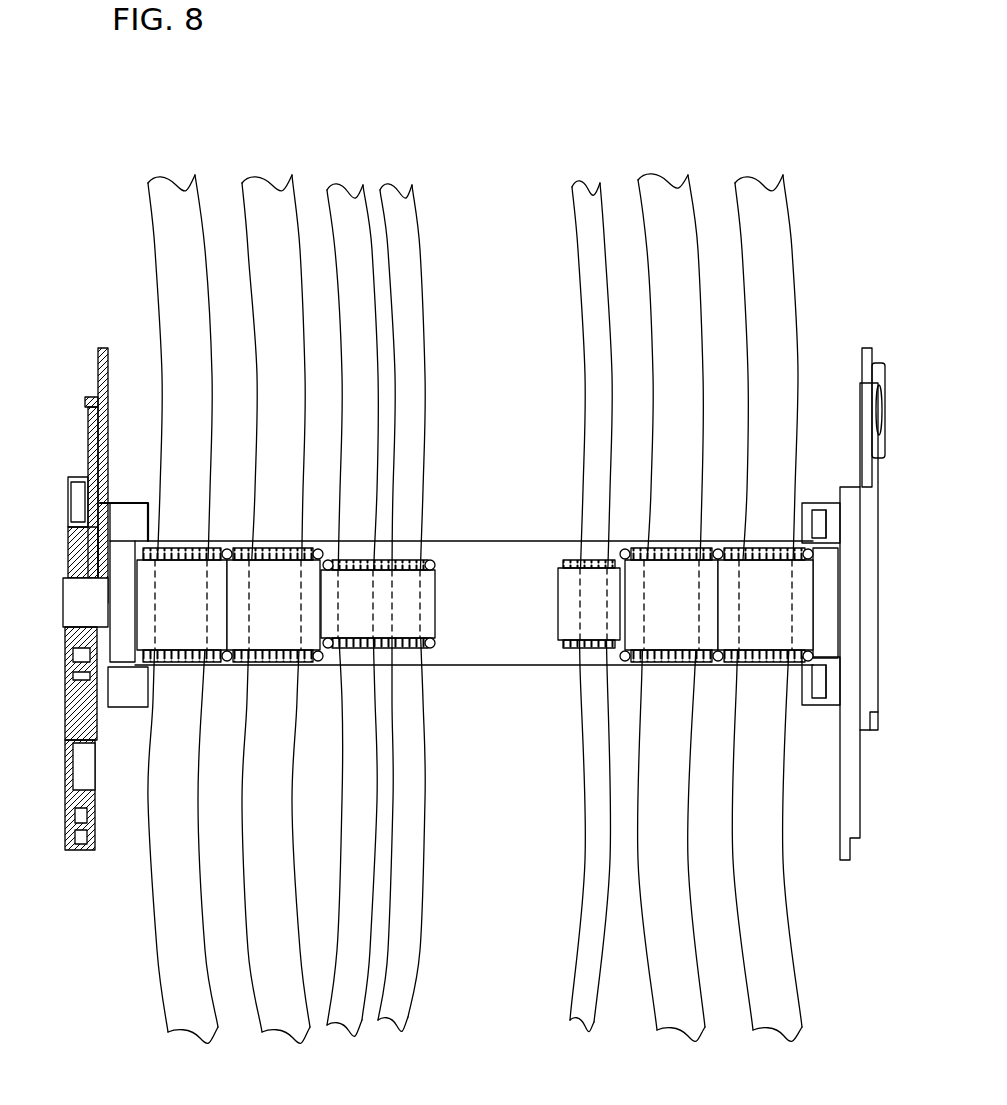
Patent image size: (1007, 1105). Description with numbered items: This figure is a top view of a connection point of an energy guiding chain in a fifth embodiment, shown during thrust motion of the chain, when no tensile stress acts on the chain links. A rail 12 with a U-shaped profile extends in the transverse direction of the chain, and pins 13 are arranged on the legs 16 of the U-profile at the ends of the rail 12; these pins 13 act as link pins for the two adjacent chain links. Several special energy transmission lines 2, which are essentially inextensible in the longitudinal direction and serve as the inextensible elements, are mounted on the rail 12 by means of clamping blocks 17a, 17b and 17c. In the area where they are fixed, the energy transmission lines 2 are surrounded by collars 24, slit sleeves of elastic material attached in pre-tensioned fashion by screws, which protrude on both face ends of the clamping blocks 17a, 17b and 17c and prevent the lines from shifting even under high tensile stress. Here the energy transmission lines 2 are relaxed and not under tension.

The energy transmission lines 2 is at (275, 226).
The rail 12 is at (492, 541).
The pins 13 is at (83, 600).
The legs 16 is at (122, 594).
The clamping block 17a is at (475, 605).
The clamping block 17b is at (378, 604).
The clamping block 17c is at (589, 604).
The collars 24 is at (250, 547).